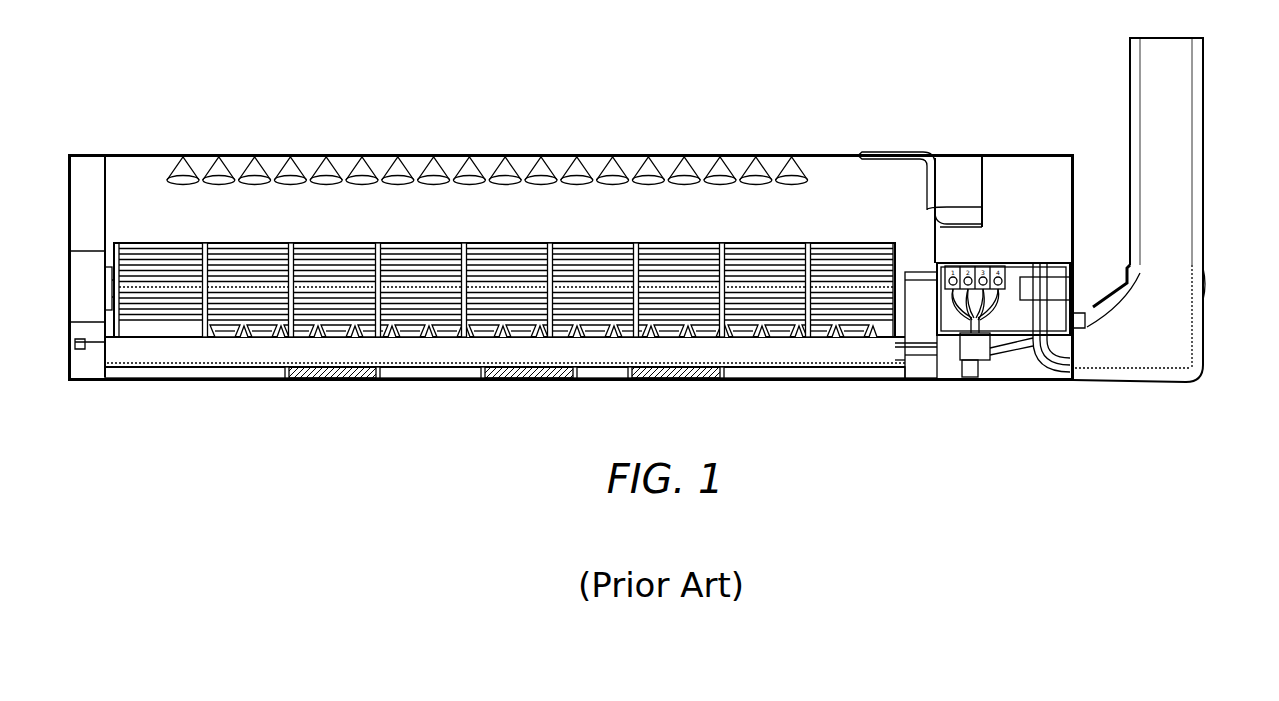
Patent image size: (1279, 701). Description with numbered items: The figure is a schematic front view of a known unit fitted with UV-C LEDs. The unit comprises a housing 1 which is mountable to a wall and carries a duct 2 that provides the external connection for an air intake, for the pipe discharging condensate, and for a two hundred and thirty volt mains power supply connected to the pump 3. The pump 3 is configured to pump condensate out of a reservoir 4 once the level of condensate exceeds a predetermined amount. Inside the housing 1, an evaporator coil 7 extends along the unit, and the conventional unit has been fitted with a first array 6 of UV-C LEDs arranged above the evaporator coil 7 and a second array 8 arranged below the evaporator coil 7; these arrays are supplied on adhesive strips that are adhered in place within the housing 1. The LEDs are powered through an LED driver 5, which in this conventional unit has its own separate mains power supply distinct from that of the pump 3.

The housing 1 is at (830, 152).
The duct 2 is at (1203, 48).
The pump 3 is at (680, 372).
The reservoir 4 is at (535, 372).
The LED driver 5 is at (338, 372).
The first array 6 is at (298, 184).
The evaporator coil 7 is at (504, 306).
The second array 8 is at (215, 328).